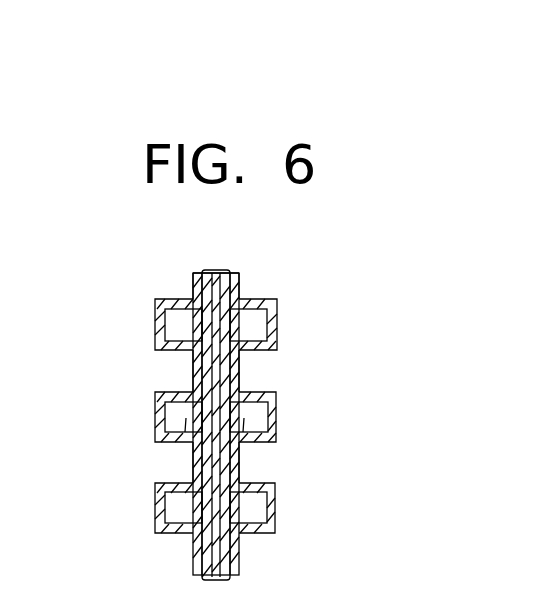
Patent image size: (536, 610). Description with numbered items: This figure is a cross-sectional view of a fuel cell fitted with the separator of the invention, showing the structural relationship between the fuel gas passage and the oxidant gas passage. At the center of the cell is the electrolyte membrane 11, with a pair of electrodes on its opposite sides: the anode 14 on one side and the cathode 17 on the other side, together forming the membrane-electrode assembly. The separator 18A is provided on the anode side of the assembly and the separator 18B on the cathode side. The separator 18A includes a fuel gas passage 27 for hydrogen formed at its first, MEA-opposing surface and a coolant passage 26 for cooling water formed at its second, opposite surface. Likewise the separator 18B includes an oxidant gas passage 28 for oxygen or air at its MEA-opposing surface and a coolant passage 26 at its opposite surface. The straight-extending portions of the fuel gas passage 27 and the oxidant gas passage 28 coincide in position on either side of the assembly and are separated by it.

The electrolyte membrane 11 is at (215, 272).
The anode 14 is at (240, 293).
The cathode 17 is at (190, 302).
The separator on the anode side 18A is at (277, 326).
The separator on the cathode side 18B is at (155, 325).
The coolant passage 26 is at (181, 373).
The fuel gas passage 27 is at (254, 320).
The oxidant gas passage 28 is at (176, 312).